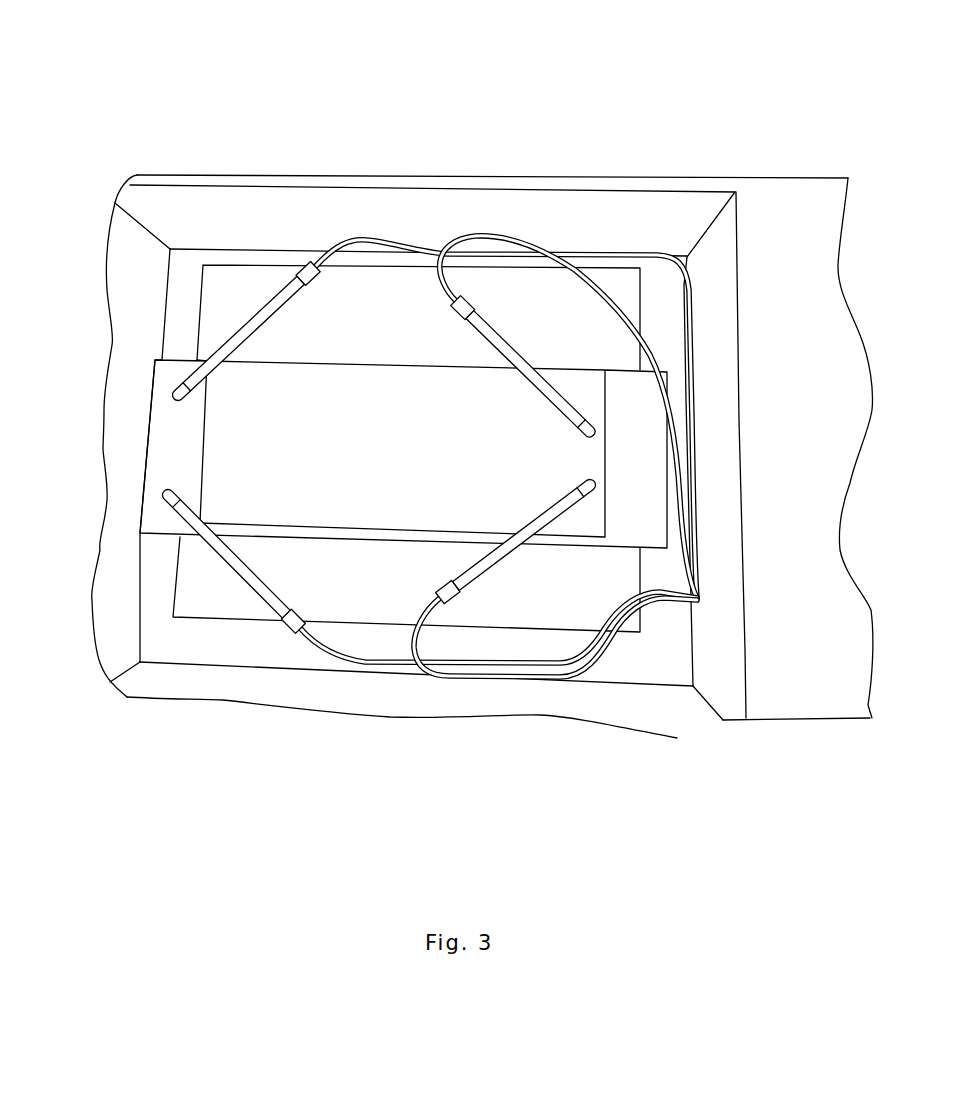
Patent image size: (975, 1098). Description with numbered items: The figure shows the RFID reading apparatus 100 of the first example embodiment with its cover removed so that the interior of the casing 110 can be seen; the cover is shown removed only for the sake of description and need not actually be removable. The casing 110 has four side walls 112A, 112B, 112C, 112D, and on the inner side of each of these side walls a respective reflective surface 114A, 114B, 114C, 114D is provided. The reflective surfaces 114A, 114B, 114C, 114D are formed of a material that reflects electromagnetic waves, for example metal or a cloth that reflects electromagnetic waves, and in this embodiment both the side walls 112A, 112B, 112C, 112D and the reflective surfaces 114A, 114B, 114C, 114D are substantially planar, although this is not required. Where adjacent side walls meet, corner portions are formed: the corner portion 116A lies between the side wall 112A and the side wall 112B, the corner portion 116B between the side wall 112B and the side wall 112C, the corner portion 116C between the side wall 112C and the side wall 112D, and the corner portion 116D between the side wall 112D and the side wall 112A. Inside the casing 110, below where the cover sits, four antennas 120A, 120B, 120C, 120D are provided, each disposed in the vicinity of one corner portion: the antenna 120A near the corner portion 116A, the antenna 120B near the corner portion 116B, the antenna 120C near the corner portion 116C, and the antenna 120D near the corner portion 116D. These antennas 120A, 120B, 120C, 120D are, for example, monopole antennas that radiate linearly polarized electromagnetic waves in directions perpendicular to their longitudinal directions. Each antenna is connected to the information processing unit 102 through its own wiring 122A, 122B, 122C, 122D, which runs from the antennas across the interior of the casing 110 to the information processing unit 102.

The RFID reading apparatus 100 is at (146, 72).
The information processing unit 102 is at (801, 205).
The casing 110 is at (262, 175).
The side wall 112A is at (130, 398).
The side wall 112B is at (215, 695).
The side wall 112C is at (728, 362).
The side wall 112D is at (558, 178).
The reflective surface 114A is at (115, 578).
The reflective surface 114B is at (321, 704).
The reflective surface 114C is at (726, 626).
The reflective surface 114D is at (382, 206).
The corner portion 116A is at (124, 676).
The corner portion 116B is at (708, 709).
The corner portion 116C is at (698, 216).
The corner portion 116D is at (145, 221).
The antenna 120A is at (250, 567).
The antenna 120B is at (503, 553).
The antenna 120C is at (498, 345).
The antenna 120D is at (263, 321).
The wiring 122A is at (318, 641).
The wiring 122B is at (425, 645).
The wiring 122C is at (593, 285).
The wiring 122D is at (343, 256).